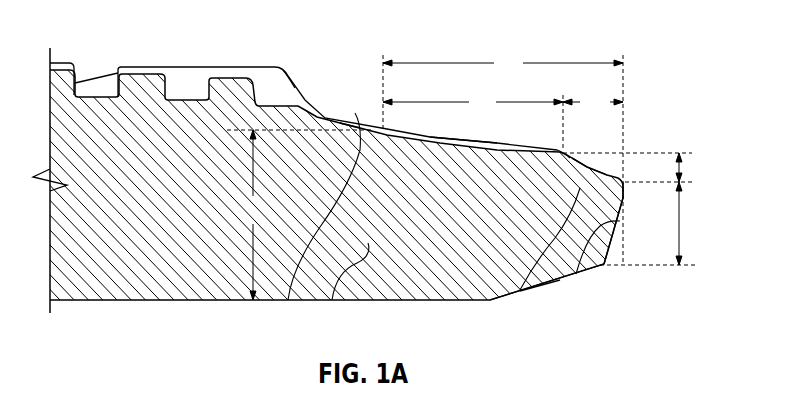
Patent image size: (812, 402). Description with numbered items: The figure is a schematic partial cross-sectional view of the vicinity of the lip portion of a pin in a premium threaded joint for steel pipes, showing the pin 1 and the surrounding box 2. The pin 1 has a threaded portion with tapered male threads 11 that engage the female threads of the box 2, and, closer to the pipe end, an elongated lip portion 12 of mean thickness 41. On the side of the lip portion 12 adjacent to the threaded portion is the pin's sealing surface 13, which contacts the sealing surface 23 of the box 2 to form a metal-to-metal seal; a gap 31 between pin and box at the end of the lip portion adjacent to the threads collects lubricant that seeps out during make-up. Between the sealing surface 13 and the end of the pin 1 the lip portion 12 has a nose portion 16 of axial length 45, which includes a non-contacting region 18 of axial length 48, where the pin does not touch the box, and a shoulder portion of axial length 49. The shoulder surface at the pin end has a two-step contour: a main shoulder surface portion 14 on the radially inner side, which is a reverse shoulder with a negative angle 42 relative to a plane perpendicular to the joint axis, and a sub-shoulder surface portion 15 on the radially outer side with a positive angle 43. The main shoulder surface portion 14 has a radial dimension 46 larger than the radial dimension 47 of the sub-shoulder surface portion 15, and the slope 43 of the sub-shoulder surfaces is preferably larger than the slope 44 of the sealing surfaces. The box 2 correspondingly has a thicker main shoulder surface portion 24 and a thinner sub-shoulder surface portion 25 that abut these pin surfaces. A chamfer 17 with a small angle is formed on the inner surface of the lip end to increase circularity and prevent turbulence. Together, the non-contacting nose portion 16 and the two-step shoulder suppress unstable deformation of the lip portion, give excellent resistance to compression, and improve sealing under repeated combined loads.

The pin 1 is at (127, 283).
The box 2 is at (658, 75).
The male threads 11 is at (133, 91).
The lip portion 12 is at (332, 300).
The sealing surface 13 is at (288, 300).
The main shoulder surface portion 14 is at (576, 274).
The sub-shoulder surface portion 15 is at (520, 290).
The nose portion 16 is at (546, 262).
The chamfer 17 is at (537, 290).
The non-contacting region 18 is at (462, 141).
The sealing surface 23 is at (355, 113).
The main shoulder surface portion 24 is at (624, 208).
The sub-shoulder surface portion 25 is at (580, 188).
The gap 31 is at (188, 74).
The mean thickness 41 is at (251, 215).
The negative angle 42 is at (620, 241).
The positive angle 43 is at (610, 163).
The slope of the sealing surfaces 44 is at (307, 110).
The axial length of the nose portion 45 is at (503, 65).
The radial dimension of the main shoulder portion 46 is at (681, 221).
The radial dimension of the sub-shoulder surface 47 is at (683, 163).
The axial length of the non-contacting region 48 is at (473, 102).
The axial length of the shoulder portion 49 is at (593, 102).